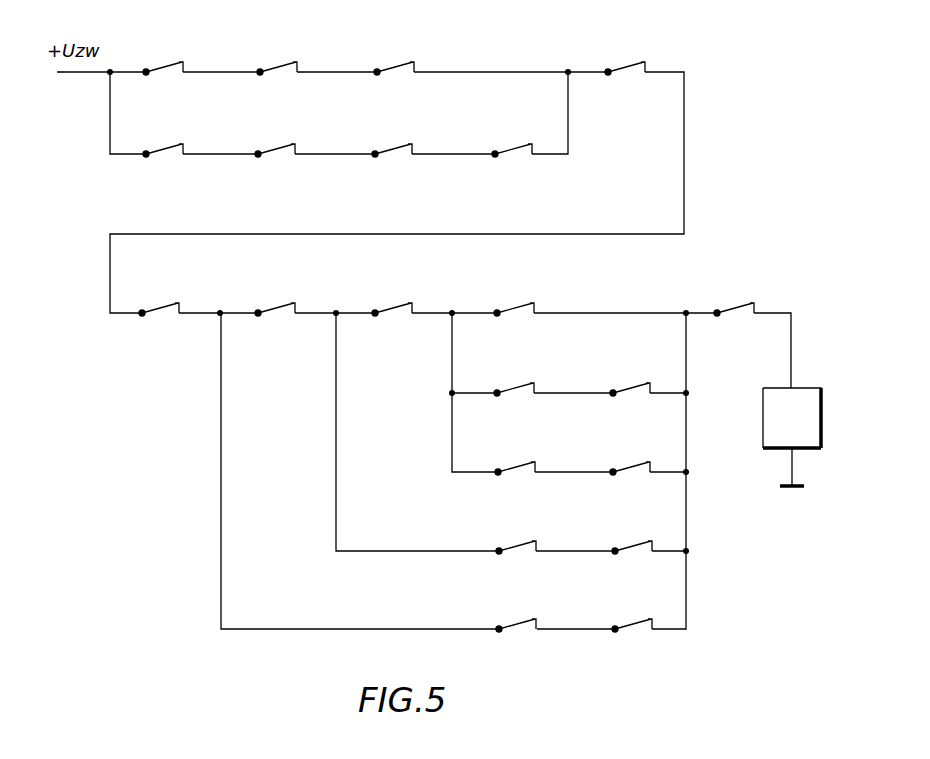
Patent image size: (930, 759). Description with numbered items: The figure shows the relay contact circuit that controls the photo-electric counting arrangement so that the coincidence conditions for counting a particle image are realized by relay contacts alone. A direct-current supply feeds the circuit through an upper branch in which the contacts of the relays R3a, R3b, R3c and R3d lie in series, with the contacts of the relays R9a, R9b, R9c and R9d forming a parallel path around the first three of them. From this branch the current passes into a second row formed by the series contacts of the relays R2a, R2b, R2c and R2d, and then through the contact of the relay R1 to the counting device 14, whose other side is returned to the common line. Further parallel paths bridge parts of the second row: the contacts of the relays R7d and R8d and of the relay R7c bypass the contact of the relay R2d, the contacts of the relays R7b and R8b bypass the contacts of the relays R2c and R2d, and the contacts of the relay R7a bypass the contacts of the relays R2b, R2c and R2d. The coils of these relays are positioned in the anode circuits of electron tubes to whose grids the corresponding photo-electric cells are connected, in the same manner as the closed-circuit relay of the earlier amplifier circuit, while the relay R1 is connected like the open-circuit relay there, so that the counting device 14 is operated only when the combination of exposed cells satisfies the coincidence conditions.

The counting device 14 is at (777, 418).
The relay R3a is at (164, 57).
The relay R3b is at (279, 57).
The relay R3c is at (395, 57).
The relay R3d is at (627, 57).
The relay R9a is at (164, 139).
The relay R9b is at (276, 139).
The relay R9c is at (393, 139).
The relay R9d is at (512, 139).
The relay R2a is at (157, 297).
The relay R2b is at (274, 297).
The relay R2c is at (388, 297).
The relay R2d is at (512, 297).
The relay R1 is at (732, 297).
The relay R7a is at (578, 614).
The relay R7b is at (519, 535).
The relay R7c is at (574, 456).
The relay R7d is at (517, 377).
The relay R8b is at (636, 535).
The relay R8d is at (629, 377).